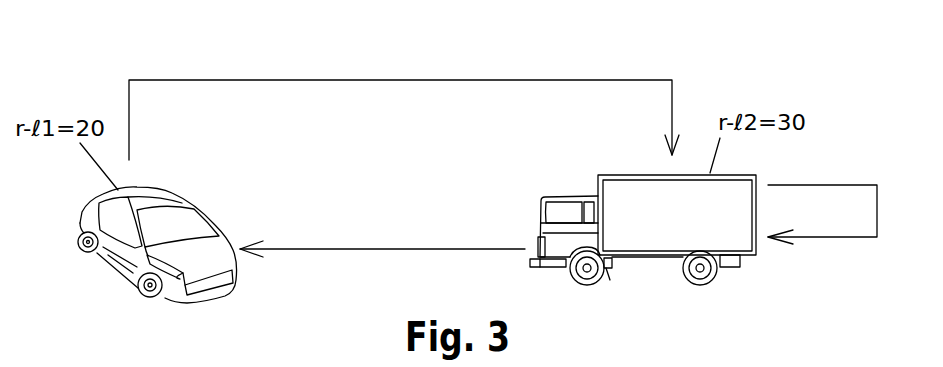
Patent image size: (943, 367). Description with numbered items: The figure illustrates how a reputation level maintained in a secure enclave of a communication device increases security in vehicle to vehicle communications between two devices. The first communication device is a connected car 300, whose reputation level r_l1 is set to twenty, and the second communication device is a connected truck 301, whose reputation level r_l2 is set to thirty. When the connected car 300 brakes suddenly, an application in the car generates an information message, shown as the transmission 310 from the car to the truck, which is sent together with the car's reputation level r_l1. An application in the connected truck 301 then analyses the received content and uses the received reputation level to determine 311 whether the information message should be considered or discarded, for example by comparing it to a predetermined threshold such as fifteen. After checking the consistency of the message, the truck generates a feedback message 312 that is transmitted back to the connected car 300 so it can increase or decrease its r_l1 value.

The connected car 300 is at (99, 298).
The connected truck 301 is at (750, 302).
The first transmission path from first vehicle to second vehicle 310 is at (367, 79).
The determining step 311 is at (855, 183).
The feedback message 312 is at (315, 251).